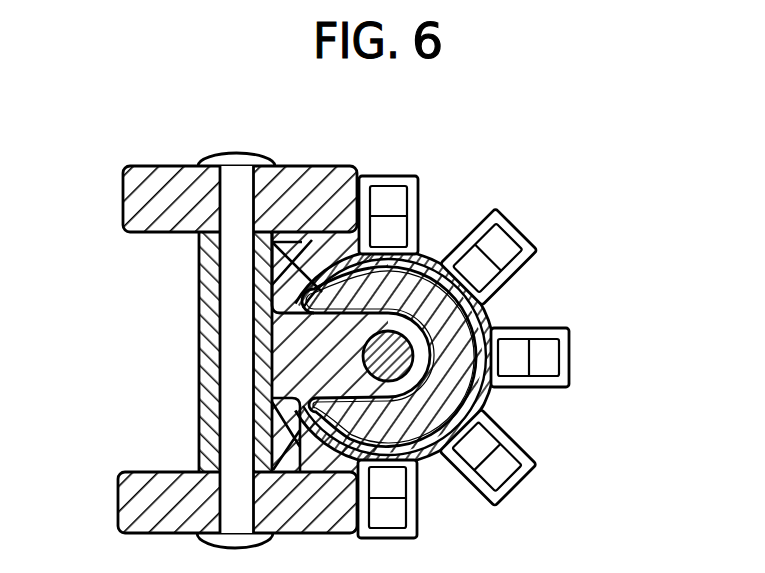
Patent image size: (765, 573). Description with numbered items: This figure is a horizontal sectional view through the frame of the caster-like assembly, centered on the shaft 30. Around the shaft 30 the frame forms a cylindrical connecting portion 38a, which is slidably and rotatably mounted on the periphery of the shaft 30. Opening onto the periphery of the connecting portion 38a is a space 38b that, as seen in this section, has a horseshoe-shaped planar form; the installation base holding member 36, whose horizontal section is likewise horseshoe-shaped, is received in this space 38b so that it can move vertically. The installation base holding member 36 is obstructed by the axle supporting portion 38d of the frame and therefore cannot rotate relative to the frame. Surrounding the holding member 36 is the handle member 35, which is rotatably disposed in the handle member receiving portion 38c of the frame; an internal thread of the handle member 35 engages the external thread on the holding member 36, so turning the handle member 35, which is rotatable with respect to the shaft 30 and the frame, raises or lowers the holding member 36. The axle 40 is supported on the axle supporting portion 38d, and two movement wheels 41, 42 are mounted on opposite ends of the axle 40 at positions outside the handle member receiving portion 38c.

The shaft 30 is at (400, 375).
The handle member 35 is at (524, 232).
The installation base holding member 36 is at (492, 312).
The connecting portion 38a is at (400, 500).
The space 38b is at (504, 418).
The handle member receiving portion 38c is at (420, 236).
The axle supporting portion 38d is at (212, 348).
The axle 40 is at (232, 297).
The movement wheel 41 is at (125, 497).
The movement wheel 42 is at (130, 205).